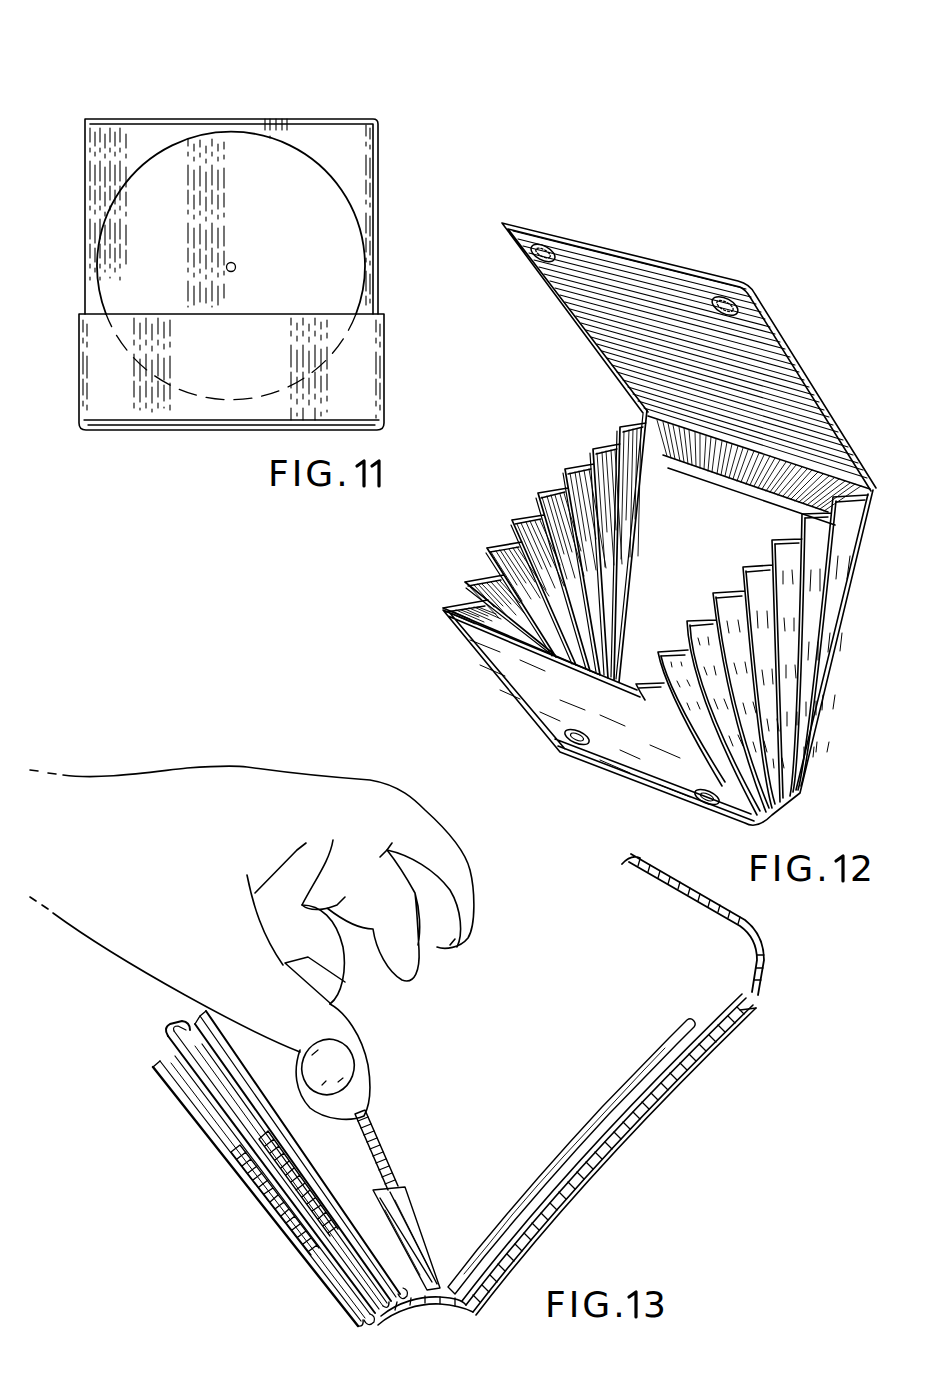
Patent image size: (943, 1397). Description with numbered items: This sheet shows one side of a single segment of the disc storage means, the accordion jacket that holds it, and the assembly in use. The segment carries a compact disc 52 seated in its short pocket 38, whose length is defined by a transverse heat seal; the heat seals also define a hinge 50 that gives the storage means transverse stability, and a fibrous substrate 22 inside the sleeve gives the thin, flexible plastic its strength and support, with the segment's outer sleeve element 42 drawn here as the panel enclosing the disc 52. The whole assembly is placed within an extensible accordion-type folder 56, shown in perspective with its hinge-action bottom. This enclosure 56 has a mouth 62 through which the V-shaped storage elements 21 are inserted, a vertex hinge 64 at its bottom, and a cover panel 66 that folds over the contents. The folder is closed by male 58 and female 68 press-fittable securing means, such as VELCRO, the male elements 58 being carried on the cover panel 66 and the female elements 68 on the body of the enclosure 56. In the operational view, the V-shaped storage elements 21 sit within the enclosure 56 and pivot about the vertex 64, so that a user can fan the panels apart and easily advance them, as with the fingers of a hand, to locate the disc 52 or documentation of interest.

In FIG. 13, the V-shaped storage elements 21 is at (297, 1210).
In FIG. 11, the substrate 22 is at (144, 430).
In FIG. 11, the short pocket 38 is at (324, 312).
In FIG. 11, the card body 42 is at (376, 163).
In FIG. 11, the hinge 50 is at (255, 433).
In FIG. 11, the compact disc 52 is at (285, 160).
In FIG. 13, the compact disc 52 is at (162, 1050).
In FIG. 12, the accordion-type folder 56 is at (800, 652).
In FIG. 13, the accordion-type folder 56 is at (619, 1160).
In FIG. 12, the male press-fittable securing means 58 is at (543, 241).
In FIG. 12, the mouth 62 is at (574, 468).
In FIG. 13, the vertex hinge 64 is at (431, 1318).
In FIG. 12, the cover panel 66 is at (770, 350).
In FIG. 13, the cover panel 66 is at (765, 946).
In FIG. 12, the female press-fittable securing means 68 is at (569, 747).